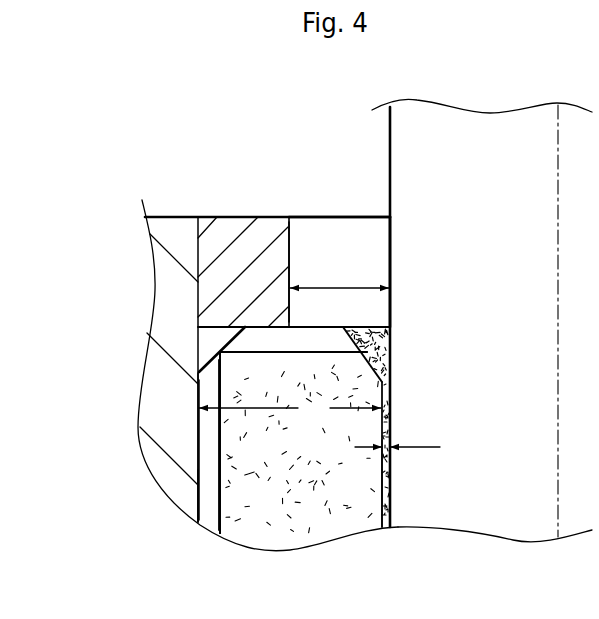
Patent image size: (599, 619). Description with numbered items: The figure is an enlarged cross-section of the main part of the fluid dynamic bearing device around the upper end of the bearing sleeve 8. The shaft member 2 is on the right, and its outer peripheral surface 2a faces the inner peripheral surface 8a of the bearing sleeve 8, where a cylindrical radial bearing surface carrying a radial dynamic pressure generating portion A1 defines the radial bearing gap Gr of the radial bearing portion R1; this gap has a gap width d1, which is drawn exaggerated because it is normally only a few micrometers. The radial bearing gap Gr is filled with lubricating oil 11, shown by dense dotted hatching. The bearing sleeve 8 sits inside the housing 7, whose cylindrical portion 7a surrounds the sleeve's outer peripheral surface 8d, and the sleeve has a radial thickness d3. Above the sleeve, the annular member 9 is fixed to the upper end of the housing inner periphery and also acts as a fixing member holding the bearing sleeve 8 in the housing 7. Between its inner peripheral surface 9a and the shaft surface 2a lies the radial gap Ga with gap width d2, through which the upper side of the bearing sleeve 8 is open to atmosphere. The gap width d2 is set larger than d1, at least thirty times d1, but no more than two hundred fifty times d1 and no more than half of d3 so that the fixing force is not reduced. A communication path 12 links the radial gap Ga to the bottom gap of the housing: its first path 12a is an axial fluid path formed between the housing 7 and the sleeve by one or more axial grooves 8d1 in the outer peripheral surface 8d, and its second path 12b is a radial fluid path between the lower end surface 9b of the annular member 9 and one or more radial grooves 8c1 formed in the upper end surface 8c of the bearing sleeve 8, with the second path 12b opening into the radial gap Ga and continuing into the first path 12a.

The shaft member 2 is at (483, 140).
The outer peripheral surface of the shaft member 2a is at (391, 268).
The annular member 9 is at (231, 233).
The radial groove 8c1 is at (275, 352).
The inner peripheral surface of the annular member 9a is at (290, 245).
The radial gap Ga is at (348, 243).
The gap width of the radial gap d2 is at (339, 274).
The lubricating oil 11 is at (389, 342).
The upper end surface of the bearing sleeve 8c is at (249, 327).
The lower end surface of the annular member 9b is at (212, 329).
The communication path 12 is at (72, 367).
The second path 12b is at (256, 347).
The first path 12a is at (210, 423).
The housing 7 is at (173, 470).
The cylindrical portion of the housing 7a is at (233, 375).
The outer peripheral surface of the bearing sleeve 8d is at (196, 500).
The axial groove 8d1 is at (218, 512).
The bearing sleeve 8 is at (283, 517).
The radial thickness of the bearing sleeve d3 is at (290, 407).
The gap width of the radial bearing gap d1 is at (397, 434).
The radial bearing portion R1 is at (381, 465).
The radial bearing gap Gr is at (390, 512).
The inner peripheral surface of the bearing sleeve 8a is at (388, 489).
The radial dynamic pressure generating portion A1 is at (461, 526).